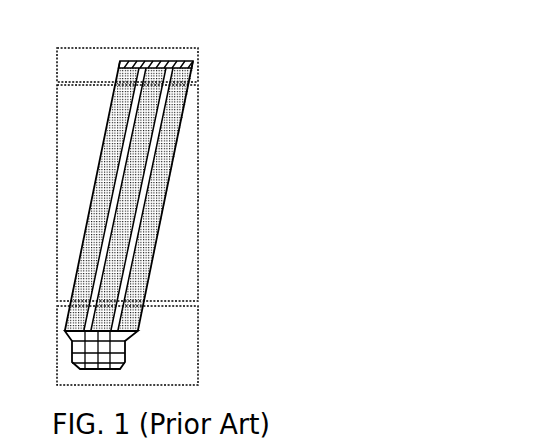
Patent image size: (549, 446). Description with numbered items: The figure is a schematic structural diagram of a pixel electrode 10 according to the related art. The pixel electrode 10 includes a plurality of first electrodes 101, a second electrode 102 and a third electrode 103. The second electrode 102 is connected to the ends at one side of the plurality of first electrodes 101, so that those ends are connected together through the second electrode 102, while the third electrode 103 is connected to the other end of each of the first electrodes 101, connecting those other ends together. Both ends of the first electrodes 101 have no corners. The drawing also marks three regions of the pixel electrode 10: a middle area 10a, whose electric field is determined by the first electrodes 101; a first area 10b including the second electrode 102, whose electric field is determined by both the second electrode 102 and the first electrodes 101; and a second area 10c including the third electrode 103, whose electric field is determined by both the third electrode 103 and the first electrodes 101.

The pixel electrode 10 is at (162, 200).
The middle area 10a is at (198, 253).
The first area 10b is at (198, 338).
The second area 10c is at (198, 60).
The first electrodes 101 is at (172, 183).
The second electrode 102 is at (125, 361).
The third electrode 103 is at (150, 61).